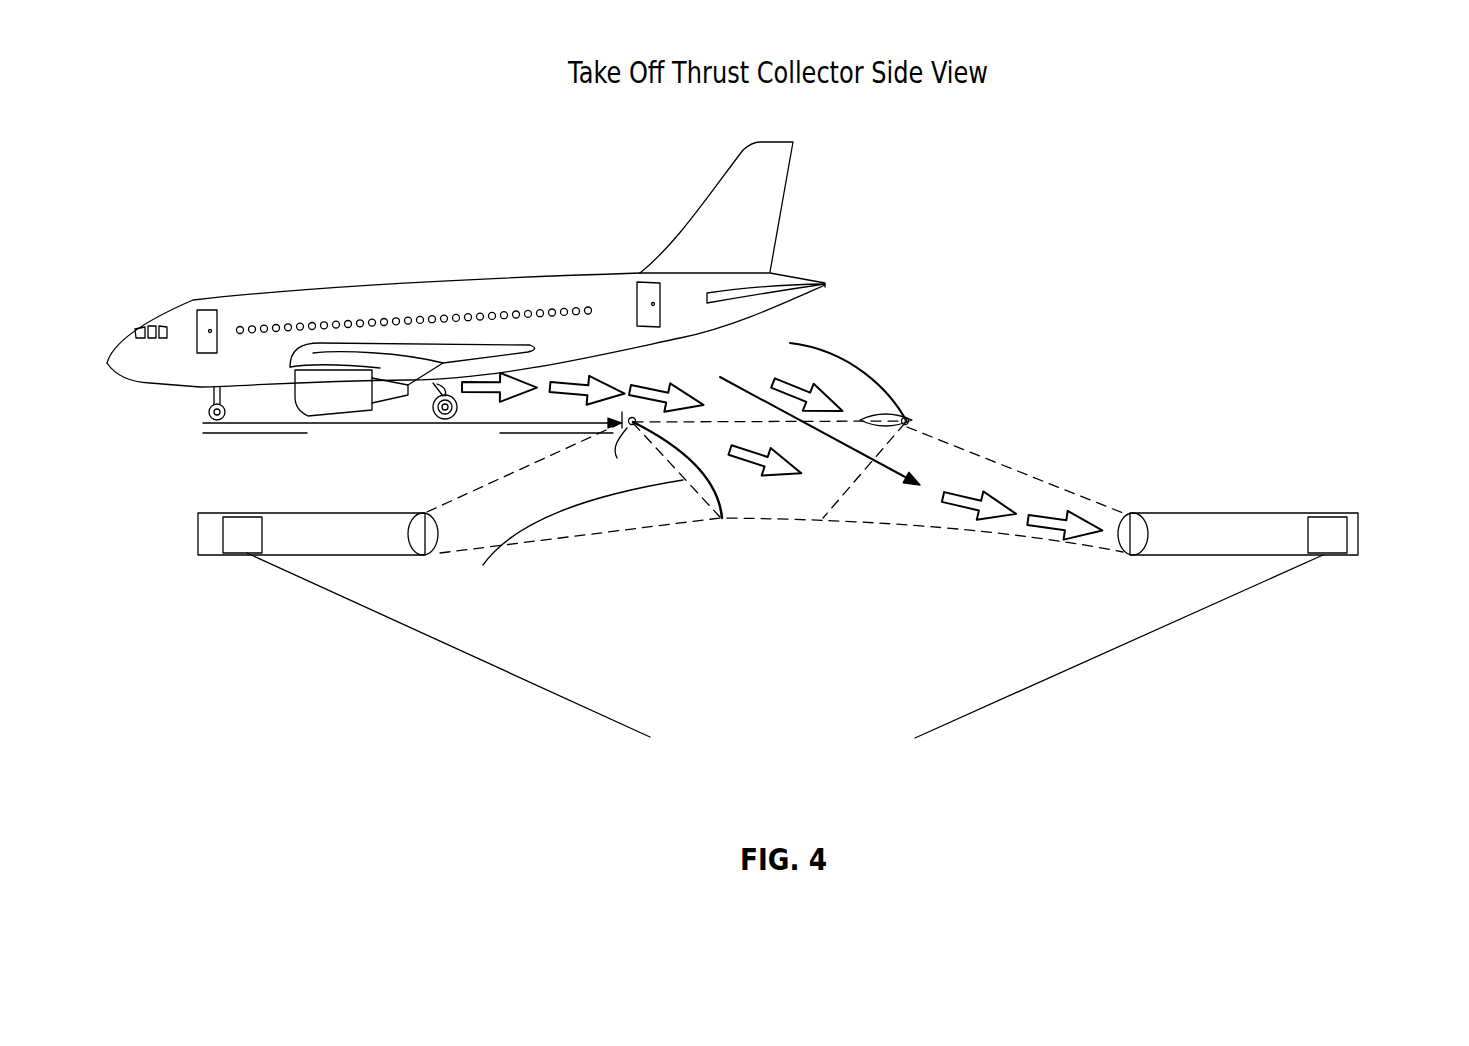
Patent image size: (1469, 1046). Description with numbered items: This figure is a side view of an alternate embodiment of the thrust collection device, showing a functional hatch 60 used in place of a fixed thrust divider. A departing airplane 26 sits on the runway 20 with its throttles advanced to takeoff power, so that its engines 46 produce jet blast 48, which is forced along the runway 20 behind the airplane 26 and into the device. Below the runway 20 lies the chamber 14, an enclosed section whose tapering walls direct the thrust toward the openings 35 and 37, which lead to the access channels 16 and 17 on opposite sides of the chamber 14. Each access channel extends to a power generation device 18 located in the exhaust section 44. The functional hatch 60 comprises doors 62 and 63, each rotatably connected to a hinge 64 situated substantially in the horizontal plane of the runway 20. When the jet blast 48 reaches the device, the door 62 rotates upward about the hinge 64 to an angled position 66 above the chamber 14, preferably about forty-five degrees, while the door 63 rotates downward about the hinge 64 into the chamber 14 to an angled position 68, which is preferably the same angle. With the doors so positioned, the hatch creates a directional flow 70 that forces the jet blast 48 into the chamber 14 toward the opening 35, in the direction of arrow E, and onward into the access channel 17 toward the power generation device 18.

The chamber 14 is at (807, 492).
The access channel 16 is at (473, 533).
The access channel 17 is at (902, 510).
The power generation device 18 is at (787, 742).
The runway 20 is at (303, 450).
The airplane 26 is at (466, 305).
The opening 35 is at (858, 482).
The opening 37 is at (577, 542).
The exhaust section 44 is at (235, 542).
The engines 46 is at (307, 387).
The jet blast 48 is at (770, 463).
The functional hatch 60 is at (1087, 328).
The door 62 is at (872, 400).
The door 63 is at (707, 472).
The hinge 64 is at (575, 477).
The angled position 66 is at (863, 423).
The angled position 68 is at (683, 443).
The directional flow 70 is at (720, 362).